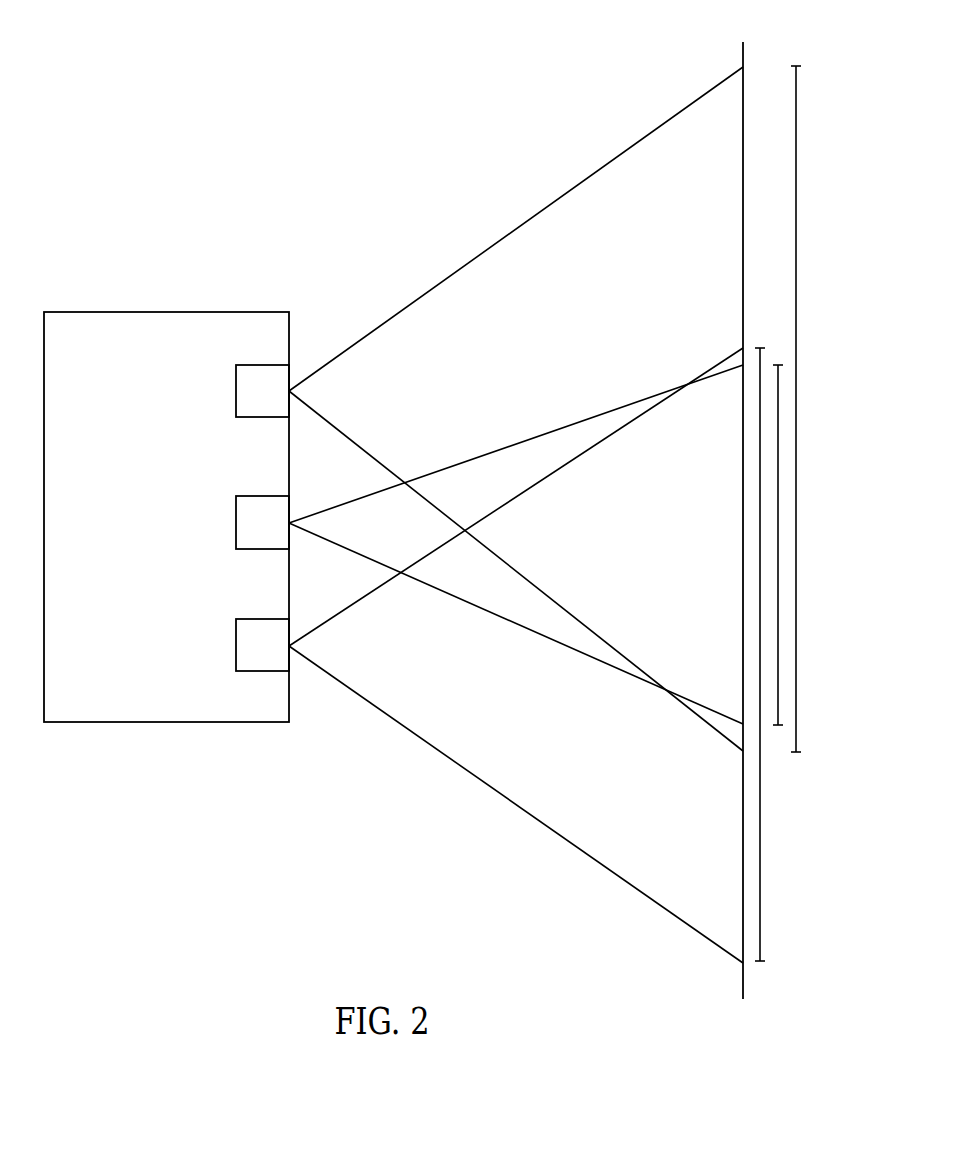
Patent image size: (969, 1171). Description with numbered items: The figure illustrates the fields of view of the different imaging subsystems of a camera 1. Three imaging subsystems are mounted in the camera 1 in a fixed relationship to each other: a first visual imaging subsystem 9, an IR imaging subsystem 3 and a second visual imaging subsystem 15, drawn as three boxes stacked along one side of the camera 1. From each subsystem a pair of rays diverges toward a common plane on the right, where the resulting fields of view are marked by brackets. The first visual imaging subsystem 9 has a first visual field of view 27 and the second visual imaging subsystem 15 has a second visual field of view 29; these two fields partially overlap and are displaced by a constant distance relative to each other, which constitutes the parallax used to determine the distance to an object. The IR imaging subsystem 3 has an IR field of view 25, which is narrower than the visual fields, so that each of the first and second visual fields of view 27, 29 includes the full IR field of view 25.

The camera 1 is at (104, 359).
The first visual imaging subsystem 9 is at (269, 400).
The IR imaging subsystem 3 is at (269, 532).
The second visual imaging subsystem 15 is at (275, 655).
The first visual field of view 27 is at (794, 553).
The IR field of view 25 is at (776, 666).
The second visual field of view 29 is at (758, 828).